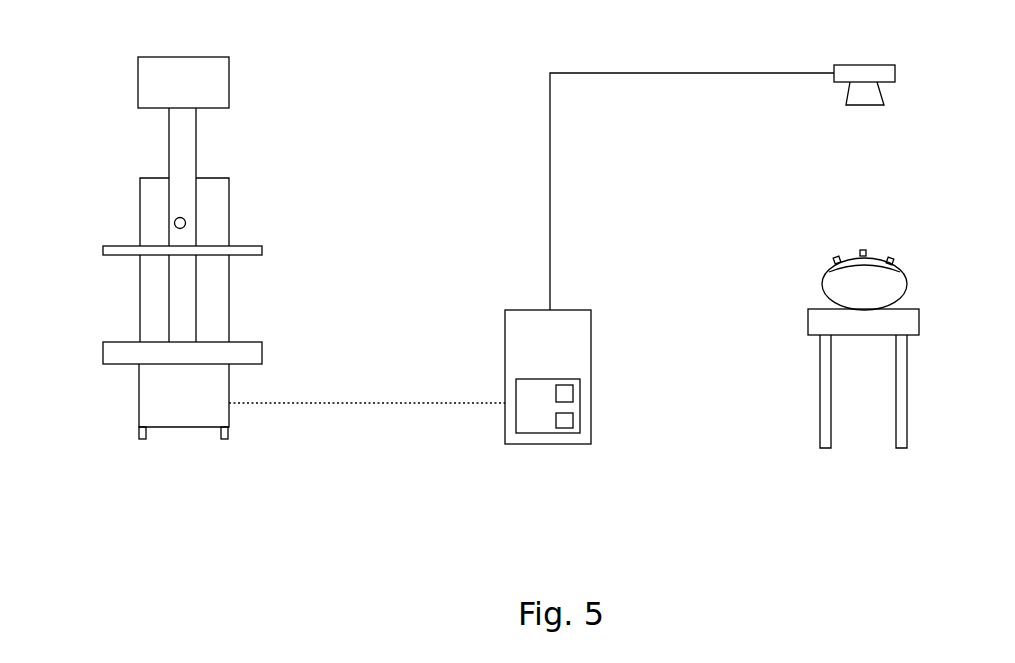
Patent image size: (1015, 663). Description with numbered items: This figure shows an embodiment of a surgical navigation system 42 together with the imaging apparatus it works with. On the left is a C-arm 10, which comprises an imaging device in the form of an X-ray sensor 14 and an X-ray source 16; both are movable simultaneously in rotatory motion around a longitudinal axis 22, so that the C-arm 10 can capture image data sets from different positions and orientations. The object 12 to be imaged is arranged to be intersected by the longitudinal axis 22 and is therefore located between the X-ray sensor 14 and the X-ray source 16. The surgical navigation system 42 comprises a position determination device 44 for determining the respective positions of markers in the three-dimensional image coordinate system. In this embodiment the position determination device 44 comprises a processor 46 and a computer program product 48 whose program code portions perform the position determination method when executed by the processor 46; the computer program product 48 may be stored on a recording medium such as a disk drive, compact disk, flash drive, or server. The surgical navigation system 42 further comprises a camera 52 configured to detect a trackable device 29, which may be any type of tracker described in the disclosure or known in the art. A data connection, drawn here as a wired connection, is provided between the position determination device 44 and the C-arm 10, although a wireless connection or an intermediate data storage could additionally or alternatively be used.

The C-arm 10 is at (249, 311).
The object 12 is at (842, 280).
The X-ray sensor 14 is at (250, 353).
The X-ray source 16 is at (217, 88).
The longitudinal axis 22 is at (186, 221).
The trackable device 29 is at (880, 258).
The surgical navigation system 42 is at (556, 430).
The position determination device 44 is at (525, 427).
The processor 46 is at (573, 388).
The computer program product 48 is at (573, 416).
The camera 52 is at (866, 93).